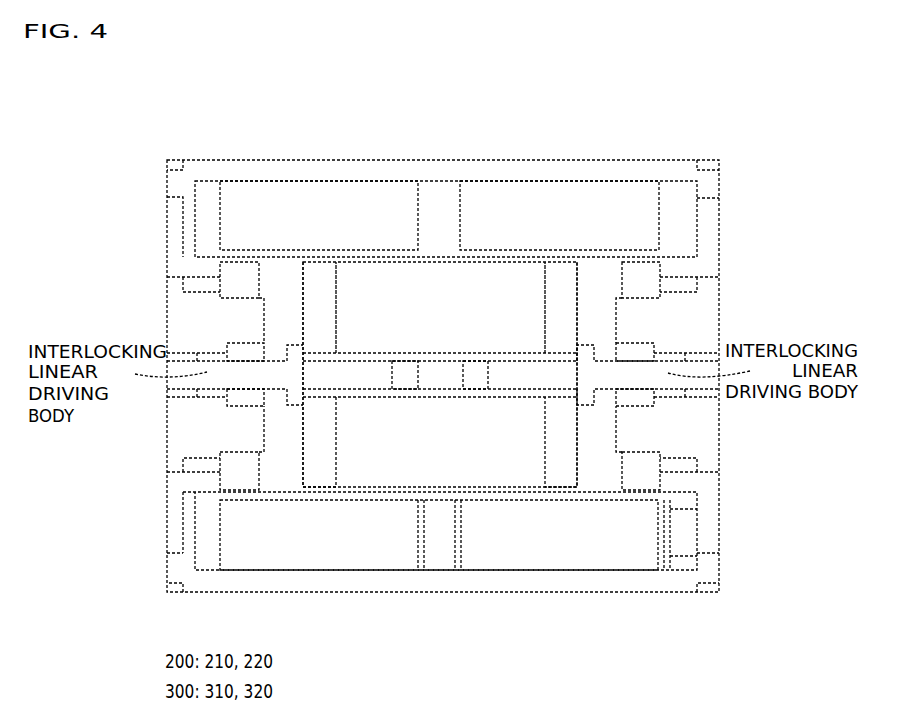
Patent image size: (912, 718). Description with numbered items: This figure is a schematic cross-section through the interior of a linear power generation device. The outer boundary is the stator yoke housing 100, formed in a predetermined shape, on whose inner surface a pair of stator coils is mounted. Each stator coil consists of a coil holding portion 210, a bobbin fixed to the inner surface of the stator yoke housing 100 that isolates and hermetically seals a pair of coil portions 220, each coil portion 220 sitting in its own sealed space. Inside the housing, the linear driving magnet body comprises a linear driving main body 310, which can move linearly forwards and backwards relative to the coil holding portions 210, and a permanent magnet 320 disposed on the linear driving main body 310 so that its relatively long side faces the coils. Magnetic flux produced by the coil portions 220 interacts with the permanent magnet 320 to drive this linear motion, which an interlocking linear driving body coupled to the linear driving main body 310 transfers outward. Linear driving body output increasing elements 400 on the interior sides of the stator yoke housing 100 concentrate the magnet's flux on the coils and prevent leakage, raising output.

The stator yoke housing 100 is at (272, 160).
The coil holding portion 210 is at (208, 226).
The coil portion 220 is at (230, 194).
The linear driving main body 310 is at (317, 473).
The permanent magnet 320 is at (441, 285).
The linear driving body output increasing element 400 is at (232, 270).